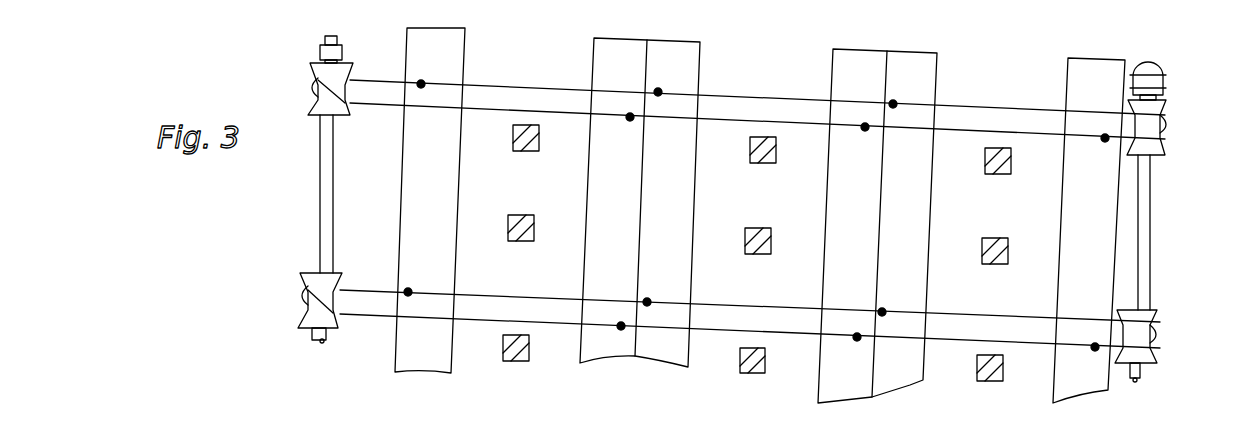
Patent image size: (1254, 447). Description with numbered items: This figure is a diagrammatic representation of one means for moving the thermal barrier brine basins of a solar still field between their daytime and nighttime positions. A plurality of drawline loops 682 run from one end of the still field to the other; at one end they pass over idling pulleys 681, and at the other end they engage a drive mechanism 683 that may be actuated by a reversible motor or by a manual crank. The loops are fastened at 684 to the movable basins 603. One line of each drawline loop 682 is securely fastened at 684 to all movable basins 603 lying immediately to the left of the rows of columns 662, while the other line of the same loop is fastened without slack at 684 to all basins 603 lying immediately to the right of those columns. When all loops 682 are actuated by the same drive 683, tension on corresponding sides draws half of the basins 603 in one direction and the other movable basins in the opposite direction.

The movable basin 603 is at (432, 364).
The column 662 is at (527, 152).
The idling pulley 681 is at (322, 103).
The drawline loop 682 is at (381, 106).
The drive mechanism 683 is at (1162, 138).
The fastening point 684 is at (425, 84).